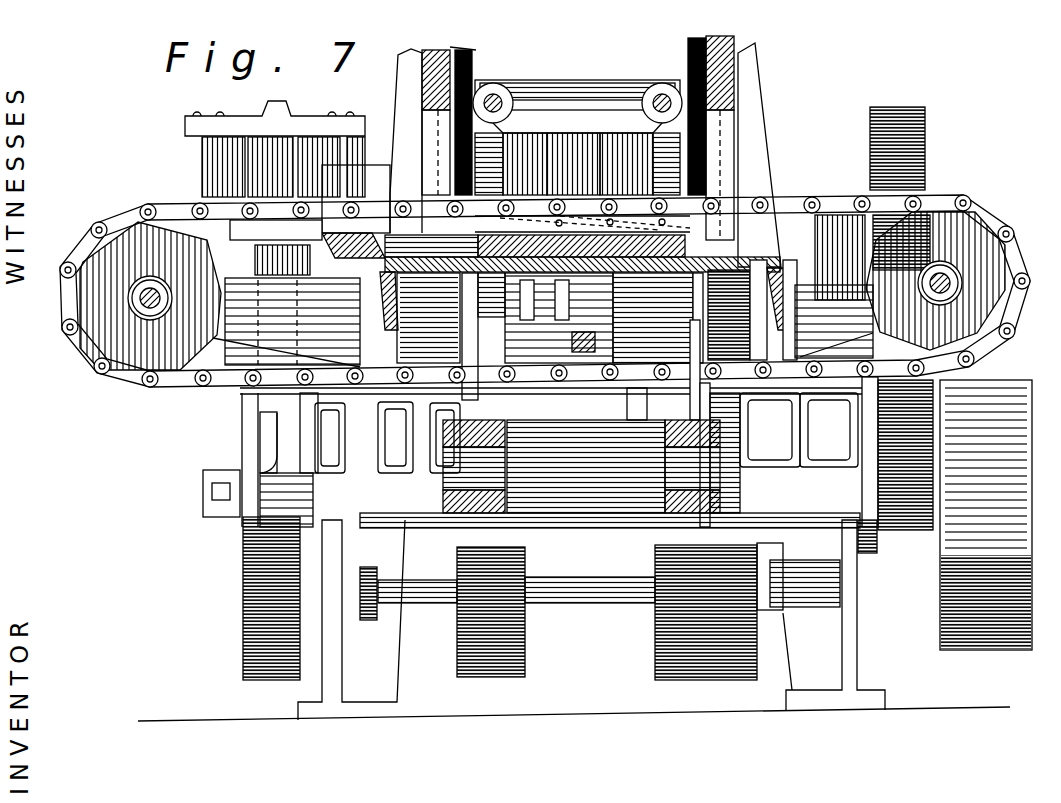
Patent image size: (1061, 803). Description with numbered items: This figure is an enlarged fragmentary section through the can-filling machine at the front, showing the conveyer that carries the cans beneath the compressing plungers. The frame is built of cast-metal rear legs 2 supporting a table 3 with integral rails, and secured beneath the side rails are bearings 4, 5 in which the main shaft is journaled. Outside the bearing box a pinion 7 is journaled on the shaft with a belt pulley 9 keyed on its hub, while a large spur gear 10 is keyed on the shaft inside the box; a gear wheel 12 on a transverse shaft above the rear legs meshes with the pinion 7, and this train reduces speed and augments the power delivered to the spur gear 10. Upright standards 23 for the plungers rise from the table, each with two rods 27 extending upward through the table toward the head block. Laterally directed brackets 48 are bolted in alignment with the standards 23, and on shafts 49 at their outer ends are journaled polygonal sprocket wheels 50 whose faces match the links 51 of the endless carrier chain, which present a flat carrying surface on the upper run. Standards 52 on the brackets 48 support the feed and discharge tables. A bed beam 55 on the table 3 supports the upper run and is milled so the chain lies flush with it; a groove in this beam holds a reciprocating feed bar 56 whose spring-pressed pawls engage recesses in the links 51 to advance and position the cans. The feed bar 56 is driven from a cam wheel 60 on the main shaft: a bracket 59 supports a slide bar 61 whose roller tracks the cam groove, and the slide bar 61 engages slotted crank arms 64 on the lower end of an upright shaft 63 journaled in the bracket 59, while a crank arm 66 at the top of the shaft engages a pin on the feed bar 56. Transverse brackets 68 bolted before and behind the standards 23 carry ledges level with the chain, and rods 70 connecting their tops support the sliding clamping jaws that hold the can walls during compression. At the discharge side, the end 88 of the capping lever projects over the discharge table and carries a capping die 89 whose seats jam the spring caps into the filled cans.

The rear legs 2 is at (393, 688).
The table 3 is at (750, 260).
The bearing 4 is at (857, 530).
The bearing 5 is at (307, 462).
The pinion 7 is at (902, 540).
The belt pulley 9 is at (1015, 407).
The spur gear 10 is at (655, 645).
The gear wheel 12 is at (913, 147).
The standards 23 is at (405, 106).
The rods 27 is at (465, 62).
The brackets 48 is at (238, 303).
The shafts 49 is at (147, 310).
The sprocket wheels 50 is at (125, 240).
The links 51 is at (82, 240).
The standards 52 is at (828, 213).
The beam 55 is at (387, 253).
The feed bar 56 is at (368, 227).
The bracket 59 is at (277, 452).
The cam wheel 60 is at (253, 603).
The slide bar 61 is at (220, 493).
The upright shaft 63 is at (257, 402).
The slotted crank arms 64 is at (240, 522).
The crank arm 66 is at (202, 213).
The transverse brackets 68 is at (578, 93).
The rods 70 is at (492, 100).
The lever end 88 is at (307, 120).
The capping die 89 is at (207, 133).